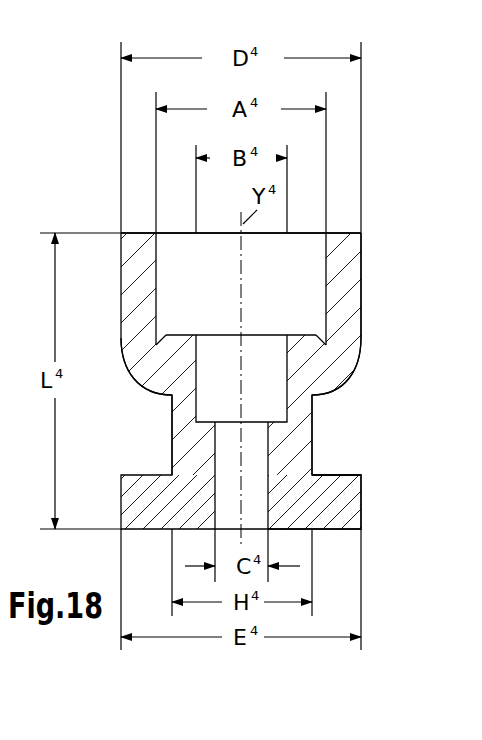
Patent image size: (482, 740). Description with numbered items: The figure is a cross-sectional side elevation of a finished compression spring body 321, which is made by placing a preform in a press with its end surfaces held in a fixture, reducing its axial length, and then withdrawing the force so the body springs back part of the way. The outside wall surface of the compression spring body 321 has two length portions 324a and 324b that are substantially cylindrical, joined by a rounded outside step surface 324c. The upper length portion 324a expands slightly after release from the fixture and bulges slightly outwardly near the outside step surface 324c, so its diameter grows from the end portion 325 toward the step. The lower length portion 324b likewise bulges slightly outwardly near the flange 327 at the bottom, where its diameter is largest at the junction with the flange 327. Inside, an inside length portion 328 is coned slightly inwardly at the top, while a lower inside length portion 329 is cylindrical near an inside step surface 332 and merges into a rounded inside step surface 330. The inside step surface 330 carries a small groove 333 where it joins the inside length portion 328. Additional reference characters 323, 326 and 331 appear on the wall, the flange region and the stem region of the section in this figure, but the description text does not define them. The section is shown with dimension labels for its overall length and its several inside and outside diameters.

The compression spring body 321 is at (380, 203).
The upper cylindrical wall 323 is at (330, 292).
The length portion 324a is at (362, 328).
The length portion 324b is at (313, 432).
The outside step surface 324c is at (320, 393).
The end portion 325 is at (340, 245).
The base flange 326 is at (293, 474).
The flange 327 is at (342, 476).
The inside length portion 328 is at (157, 290).
The inside length portion 329 is at (192, 401).
The inside step surface 330 is at (302, 337).
The stem outer surface 331 is at (222, 470).
The inside step surface 332 is at (275, 421).
The groove 333 is at (160, 335).